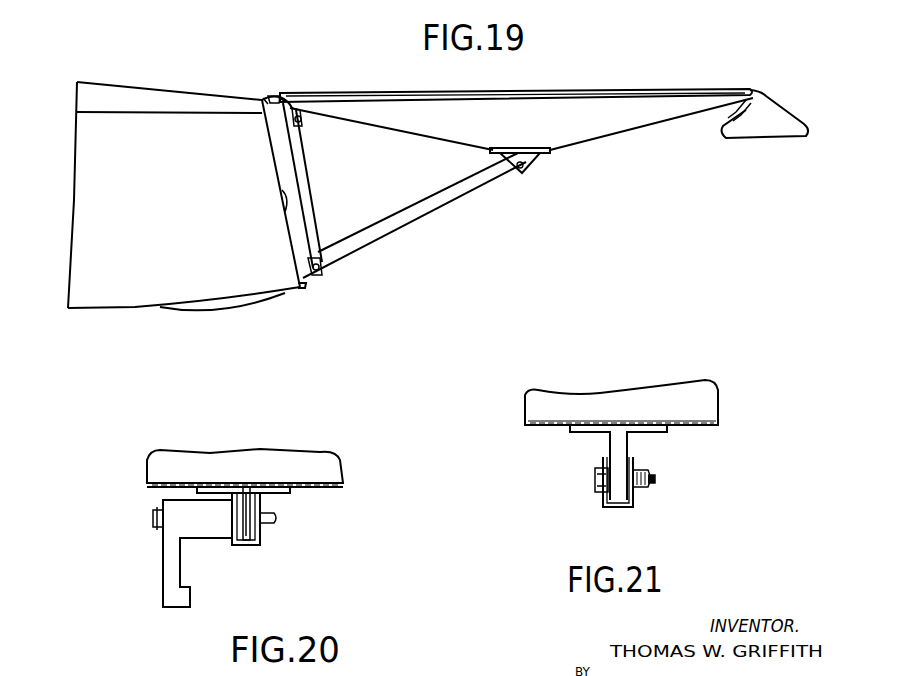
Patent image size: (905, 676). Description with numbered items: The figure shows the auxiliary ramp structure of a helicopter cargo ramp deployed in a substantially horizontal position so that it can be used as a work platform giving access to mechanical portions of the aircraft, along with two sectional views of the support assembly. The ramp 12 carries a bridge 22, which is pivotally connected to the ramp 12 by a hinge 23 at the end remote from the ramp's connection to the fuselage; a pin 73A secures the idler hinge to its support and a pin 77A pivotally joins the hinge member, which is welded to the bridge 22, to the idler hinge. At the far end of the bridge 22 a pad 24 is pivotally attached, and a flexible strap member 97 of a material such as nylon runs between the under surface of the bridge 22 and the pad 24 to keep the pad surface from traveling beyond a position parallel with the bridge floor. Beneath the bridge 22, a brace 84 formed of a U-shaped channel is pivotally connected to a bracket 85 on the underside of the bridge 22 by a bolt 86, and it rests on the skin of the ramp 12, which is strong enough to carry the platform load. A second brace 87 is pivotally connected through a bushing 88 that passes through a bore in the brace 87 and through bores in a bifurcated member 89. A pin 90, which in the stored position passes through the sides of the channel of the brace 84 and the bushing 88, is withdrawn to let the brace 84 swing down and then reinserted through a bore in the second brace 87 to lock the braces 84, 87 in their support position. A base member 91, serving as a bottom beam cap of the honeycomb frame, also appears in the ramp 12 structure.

In FIG. 19, the ramp 12 is at (132, 312).
In FIG. 19, the bridge 22 is at (649, 92).
In FIG. 20, the bridge 22 is at (234, 462).
In FIG. 21, the bridge 22 is at (580, 398).
In FIG. 19, the hinge 23 is at (274, 95).
In FIG. 19, the pad 24 is at (787, 109).
In FIG. 19, the pin 73A is at (263, 100).
In FIG. 19, the pin 77A is at (280, 98).
In FIG. 19, the brace 84 is at (435, 218).
In FIG. 20, the brace 84 is at (243, 546).
In FIG. 21, the brace 84 is at (620, 508).
In FIG. 19, the bracket 85 is at (541, 154).
In FIG. 21, the bracket 85 is at (622, 440).
In FIG. 19, the bolt 86 is at (524, 174).
In FIG. 21, the bolt 86 is at (595, 480).
In FIG. 19, the second brace 87 is at (310, 193).
In FIG. 20, the second brace 87 is at (251, 500).
In FIG. 20, the bushing 88 is at (262, 535).
In FIG. 20, the bifurcated member 89 is at (271, 493).
In FIG. 20, the pin 90 is at (203, 534).
In FIG. 19, the base member 91 is at (283, 201).
In FIG. 19, the strap member 97 is at (728, 114).